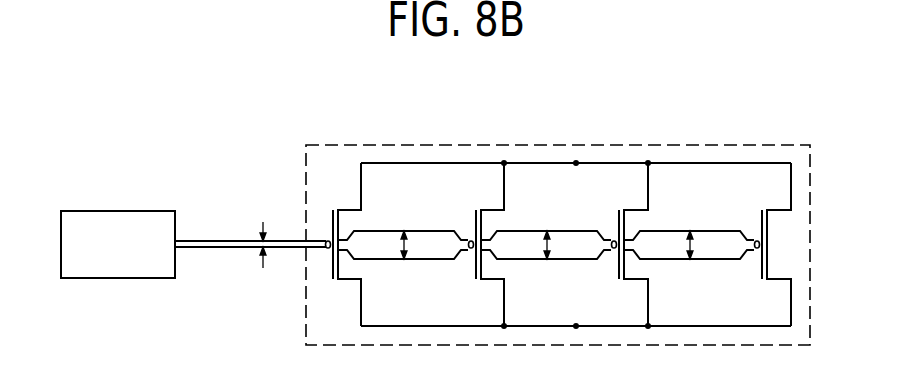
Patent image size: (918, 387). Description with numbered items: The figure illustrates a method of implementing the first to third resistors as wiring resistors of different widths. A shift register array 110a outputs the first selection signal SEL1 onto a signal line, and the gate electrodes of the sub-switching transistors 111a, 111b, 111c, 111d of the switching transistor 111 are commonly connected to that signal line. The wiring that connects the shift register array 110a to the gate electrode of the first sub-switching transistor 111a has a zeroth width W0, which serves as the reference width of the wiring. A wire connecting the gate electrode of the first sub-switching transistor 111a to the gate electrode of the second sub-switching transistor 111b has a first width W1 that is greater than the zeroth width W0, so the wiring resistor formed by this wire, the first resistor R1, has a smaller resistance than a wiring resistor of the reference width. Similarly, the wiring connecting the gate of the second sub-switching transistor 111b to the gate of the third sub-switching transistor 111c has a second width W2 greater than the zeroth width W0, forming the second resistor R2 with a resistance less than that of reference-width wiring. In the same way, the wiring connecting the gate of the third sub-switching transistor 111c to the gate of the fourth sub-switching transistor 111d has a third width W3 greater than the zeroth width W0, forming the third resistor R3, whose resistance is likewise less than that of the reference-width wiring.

The shift register array 110a is at (98, 257).
The first selection signal SEL1 is at (250, 229).
The zeroth width W0 is at (264, 244).
The switching transistor 111 is at (727, 146).
The first sub-switching transistor 111a is at (338, 244).
The second sub-switching transistor 111b is at (480, 244).
The third sub-switching transistor 111c is at (625, 244).
The fourth sub-switching transistor 111d is at (767, 244).
The first resistor R1 is at (403, 267).
The second resistor R2 is at (546, 267).
The third resistor R3 is at (689, 267).
The first width W1 is at (404, 245).
The second width W2 is at (547, 245).
The third width W3 is at (690, 245).